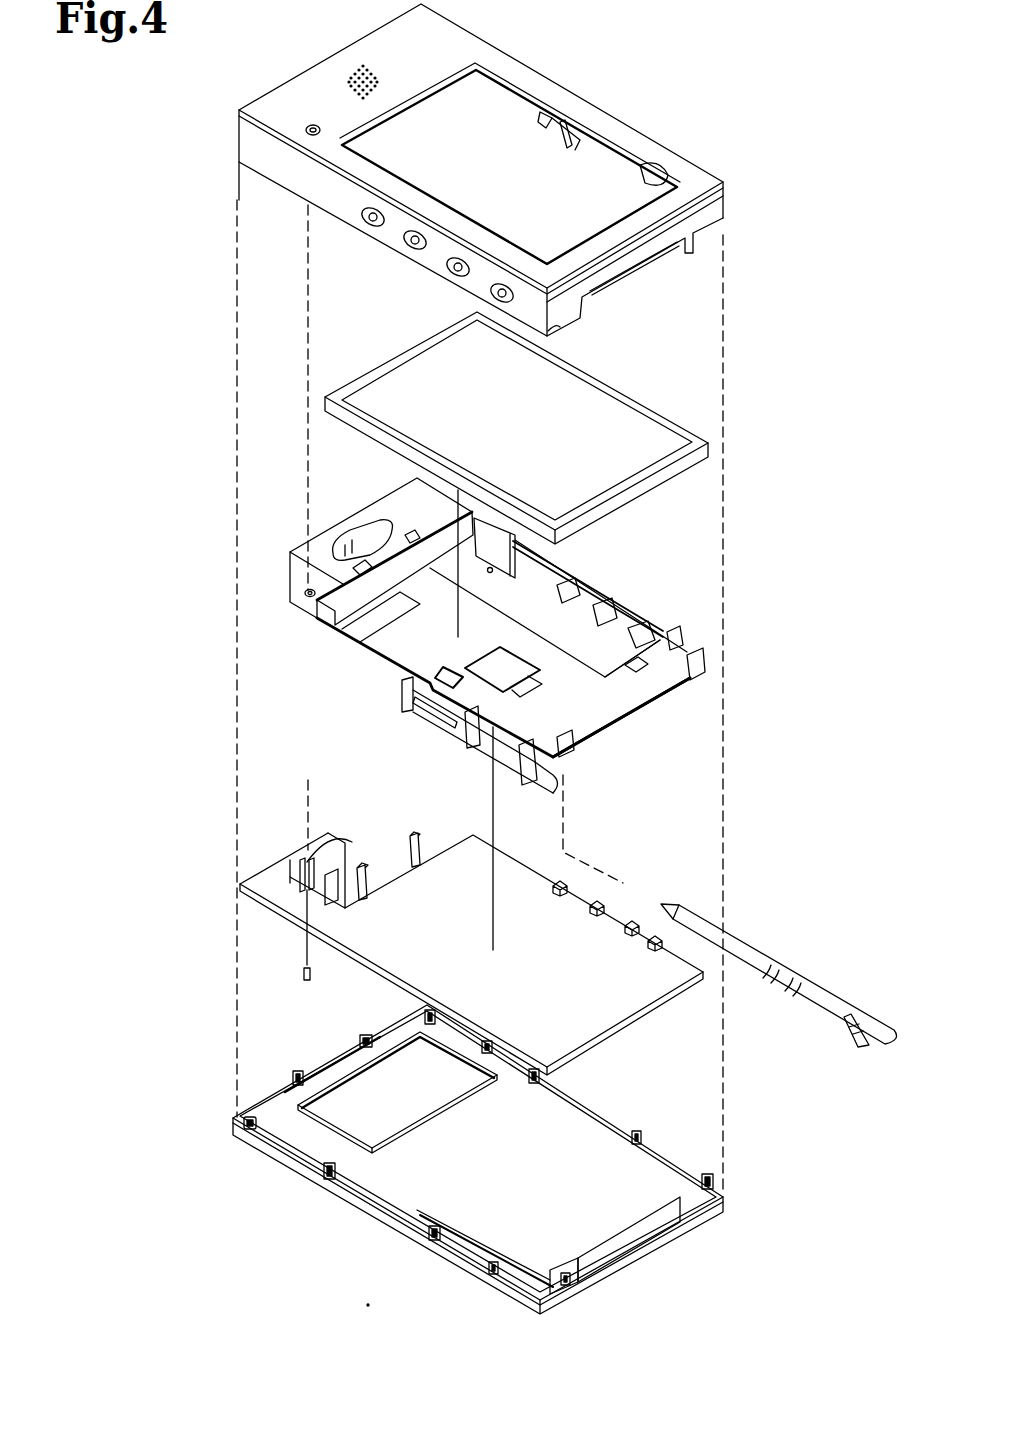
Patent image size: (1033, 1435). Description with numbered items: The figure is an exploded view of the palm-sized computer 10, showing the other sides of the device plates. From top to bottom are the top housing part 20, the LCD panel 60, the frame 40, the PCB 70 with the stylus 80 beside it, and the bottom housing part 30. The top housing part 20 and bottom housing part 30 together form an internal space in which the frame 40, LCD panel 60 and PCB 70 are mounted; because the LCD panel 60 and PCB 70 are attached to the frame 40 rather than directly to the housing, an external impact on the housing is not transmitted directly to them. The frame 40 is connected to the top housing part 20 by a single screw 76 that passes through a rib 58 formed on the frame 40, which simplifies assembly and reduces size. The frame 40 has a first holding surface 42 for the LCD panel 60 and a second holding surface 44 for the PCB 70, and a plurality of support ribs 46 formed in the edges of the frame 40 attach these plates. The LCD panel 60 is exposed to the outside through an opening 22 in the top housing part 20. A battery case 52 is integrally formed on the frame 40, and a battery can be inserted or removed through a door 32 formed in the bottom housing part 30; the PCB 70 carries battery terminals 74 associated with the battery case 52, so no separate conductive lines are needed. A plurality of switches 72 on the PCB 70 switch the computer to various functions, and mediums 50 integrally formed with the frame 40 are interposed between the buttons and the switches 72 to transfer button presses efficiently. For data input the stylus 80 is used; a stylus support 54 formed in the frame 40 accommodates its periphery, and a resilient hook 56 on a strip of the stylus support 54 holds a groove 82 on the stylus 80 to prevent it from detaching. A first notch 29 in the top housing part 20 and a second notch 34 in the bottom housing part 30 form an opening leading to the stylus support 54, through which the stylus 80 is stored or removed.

The palm-sized computer 10 is at (141, 85).
The top housing part 20 is at (247, 145).
The opening 22 is at (593, 220).
The first notch 29 is at (555, 328).
The bottom housing part 30 is at (345, 1200).
The door 32 is at (347, 1090).
The second notch 34 is at (555, 1300).
The frame 40 is at (363, 663).
The first holding surface 42 is at (648, 680).
The second holding surface 44 is at (625, 715).
The support ribs 46 is at (673, 630).
The mediums 50 is at (657, 627).
The battery case 52 is at (393, 502).
The stylus support 54 is at (458, 727).
The hook 56 is at (423, 712).
The rib 58 is at (305, 596).
The LCD panel 60 is at (635, 413).
The PCB 70 is at (607, 1020).
The switches 72 is at (655, 952).
The battery terminals 74 is at (337, 875).
The screw 76 is at (303, 973).
The stylus 80 is at (828, 993).
The groove 82 is at (770, 970).